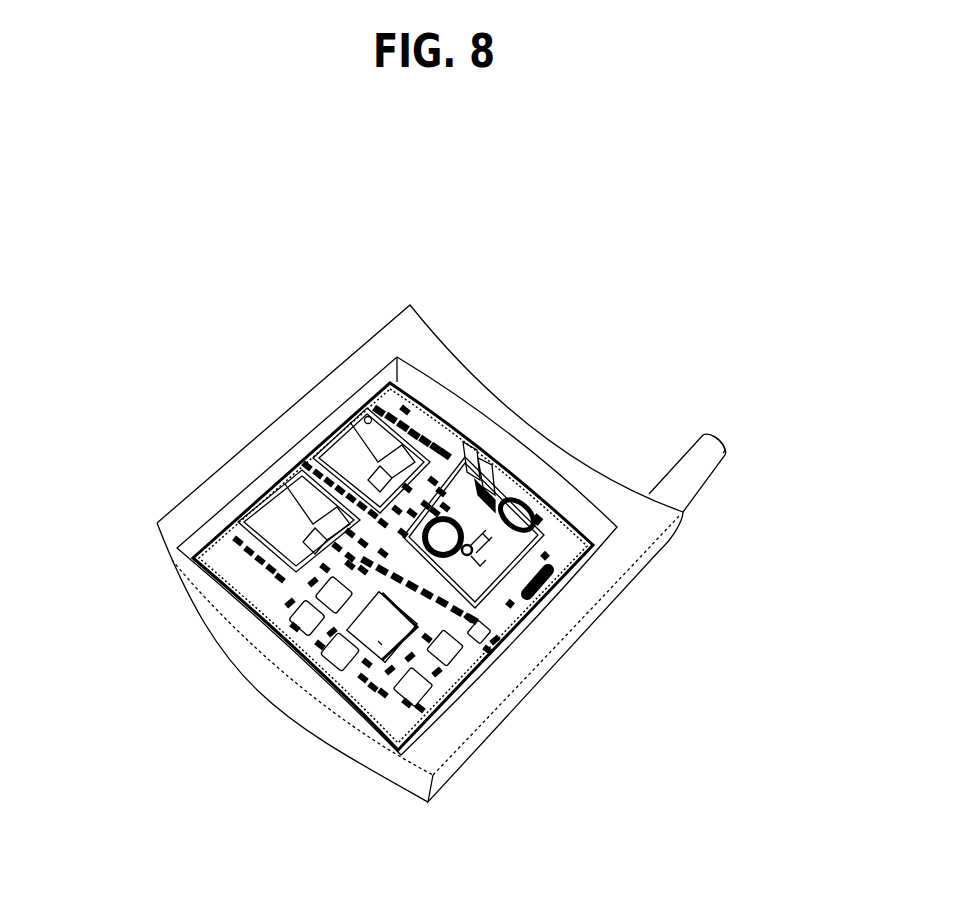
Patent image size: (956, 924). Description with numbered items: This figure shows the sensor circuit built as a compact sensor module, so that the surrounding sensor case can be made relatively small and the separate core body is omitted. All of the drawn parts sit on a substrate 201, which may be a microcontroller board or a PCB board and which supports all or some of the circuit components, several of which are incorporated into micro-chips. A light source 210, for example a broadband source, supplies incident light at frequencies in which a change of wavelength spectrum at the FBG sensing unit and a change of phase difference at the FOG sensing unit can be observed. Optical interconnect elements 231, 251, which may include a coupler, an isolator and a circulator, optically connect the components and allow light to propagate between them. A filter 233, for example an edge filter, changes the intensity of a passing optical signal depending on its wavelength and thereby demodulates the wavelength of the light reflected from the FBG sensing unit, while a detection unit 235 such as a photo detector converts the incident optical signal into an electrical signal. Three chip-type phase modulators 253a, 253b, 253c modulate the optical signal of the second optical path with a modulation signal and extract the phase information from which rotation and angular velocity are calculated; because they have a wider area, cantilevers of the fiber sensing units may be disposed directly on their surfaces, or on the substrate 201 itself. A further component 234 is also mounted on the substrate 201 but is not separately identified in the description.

The substrate 201 is at (567, 554).
The light source 210 is at (357, 690).
The optical interconnect element 231 is at (418, 690).
The optical interconnect element 251 is at (455, 662).
The filter 233 is at (322, 590).
The fourth electronic component 234 is at (293, 620).
The detection unit 235 is at (335, 654).
The phase modulator 253a is at (453, 503).
The phase modulator 253b is at (330, 457).
The phase modulator 253c is at (256, 525).